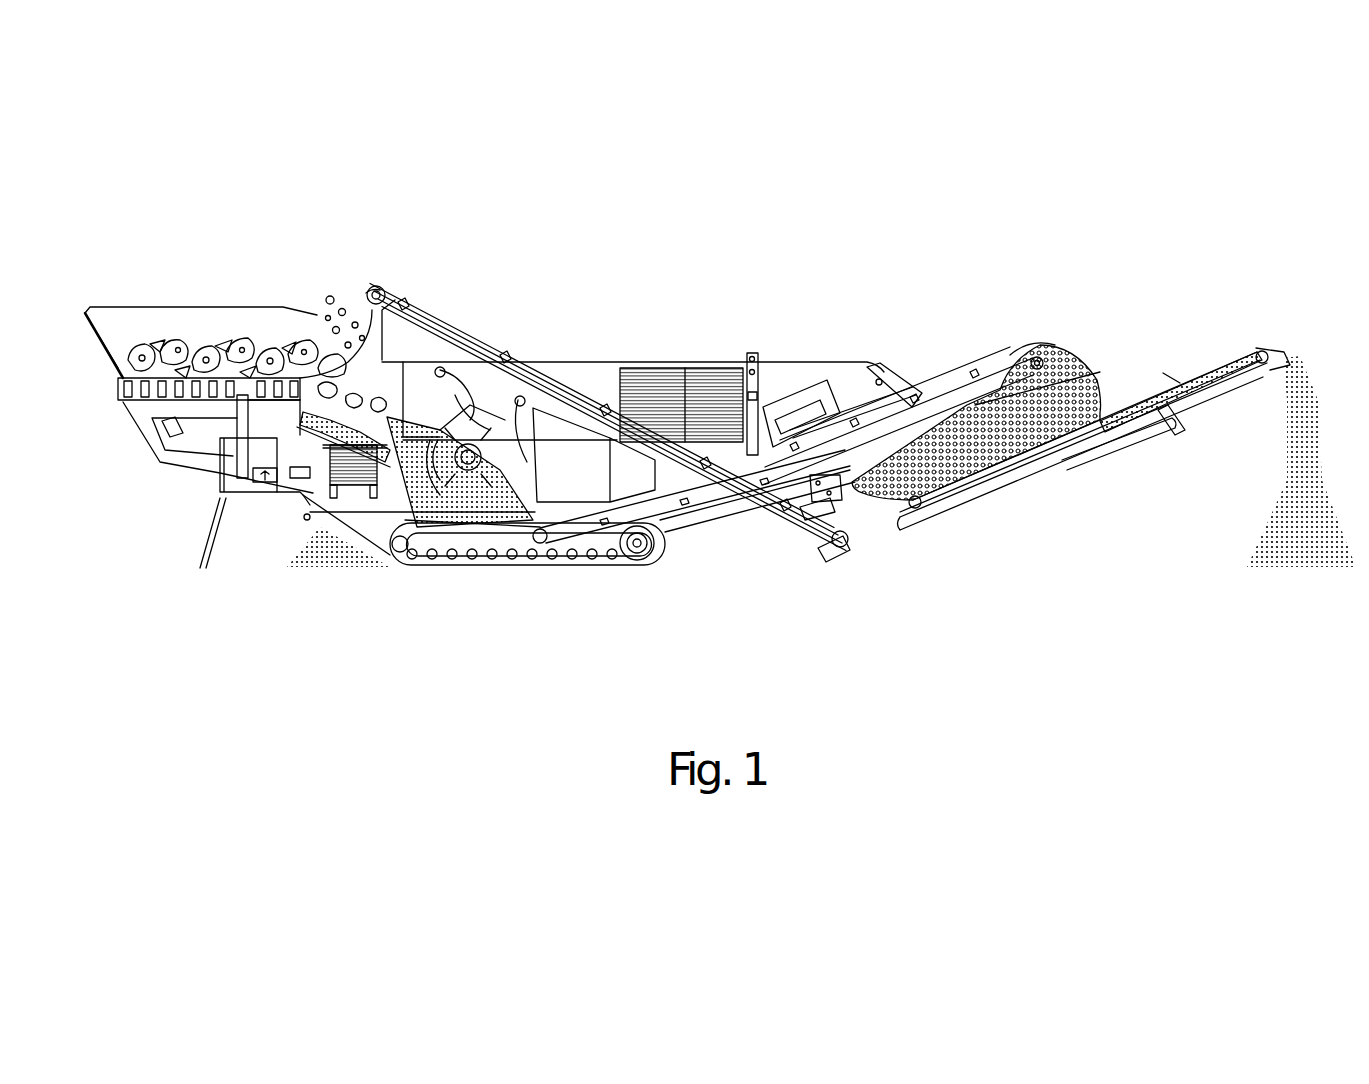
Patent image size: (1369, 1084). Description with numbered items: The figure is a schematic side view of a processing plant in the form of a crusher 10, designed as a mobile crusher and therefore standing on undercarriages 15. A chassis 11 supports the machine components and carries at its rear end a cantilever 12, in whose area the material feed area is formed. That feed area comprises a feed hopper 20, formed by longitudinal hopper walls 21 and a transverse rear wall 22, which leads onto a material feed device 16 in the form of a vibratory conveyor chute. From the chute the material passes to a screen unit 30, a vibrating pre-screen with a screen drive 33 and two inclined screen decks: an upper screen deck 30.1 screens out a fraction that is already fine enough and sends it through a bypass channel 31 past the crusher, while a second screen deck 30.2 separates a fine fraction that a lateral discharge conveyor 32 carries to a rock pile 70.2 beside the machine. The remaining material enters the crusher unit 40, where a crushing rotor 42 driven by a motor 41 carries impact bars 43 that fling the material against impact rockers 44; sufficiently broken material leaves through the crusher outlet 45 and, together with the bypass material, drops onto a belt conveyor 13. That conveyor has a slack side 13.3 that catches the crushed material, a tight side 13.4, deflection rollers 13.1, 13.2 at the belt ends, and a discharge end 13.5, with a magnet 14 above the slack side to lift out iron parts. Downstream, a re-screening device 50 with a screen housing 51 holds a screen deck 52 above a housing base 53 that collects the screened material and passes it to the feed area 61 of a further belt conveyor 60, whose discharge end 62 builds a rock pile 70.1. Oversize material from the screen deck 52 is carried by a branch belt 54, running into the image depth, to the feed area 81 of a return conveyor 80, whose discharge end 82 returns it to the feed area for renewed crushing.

The crusher 10 is at (642, 337).
The chassis 11 is at (330, 448).
The cantilever 12 is at (157, 438).
The belt conveyor 13 is at (665, 547).
The deflection roller 13.1 is at (542, 545).
The deflection roller 13.2 is at (1040, 365).
The slack side 13.3 is at (920, 402).
The tight side 13.4 is at (958, 496).
The discharge end 13.5 is at (1062, 367).
The magnet 14 is at (810, 420).
The undercarriage 15 is at (660, 512).
The material feed device 16 is at (203, 387).
The feed hopper 20 is at (140, 300).
The hopper wall 21 is at (108, 315).
The rear wall 22 is at (92, 332).
The screen unit 30 is at (317, 350).
The upper screen deck 30.1 is at (370, 297).
The second screen deck 30.2 is at (295, 402).
The bypass channel 31 is at (385, 475).
The lateral discharge conveyor 32 is at (310, 437).
The screen drive 33 is at (303, 408).
The crusher unit 40 is at (477, 397).
The motor 41 is at (590, 517).
The crushing rotor 42 is at (458, 448).
The impact bar 43 is at (457, 510).
The impact rocker 44 is at (452, 375).
The crusher outlet 45 is at (438, 500).
The re-screening device 50 is at (1120, 372).
The screen housing 51 is at (1083, 372).
The screen deck 52 is at (1090, 388).
The housing base 53 is at (1017, 477).
The branch belt 54 is at (800, 507).
The further belt conveyor 60 is at (1250, 348).
The feed area 61 is at (1077, 453).
The discharge end 62 is at (1270, 353).
The rock pile 70.1 is at (1297, 567).
The rock pile 70.2 is at (327, 560).
The return conveyor 80 is at (660, 397).
The feed area 81 is at (837, 537).
The discharge end 82 is at (358, 288).